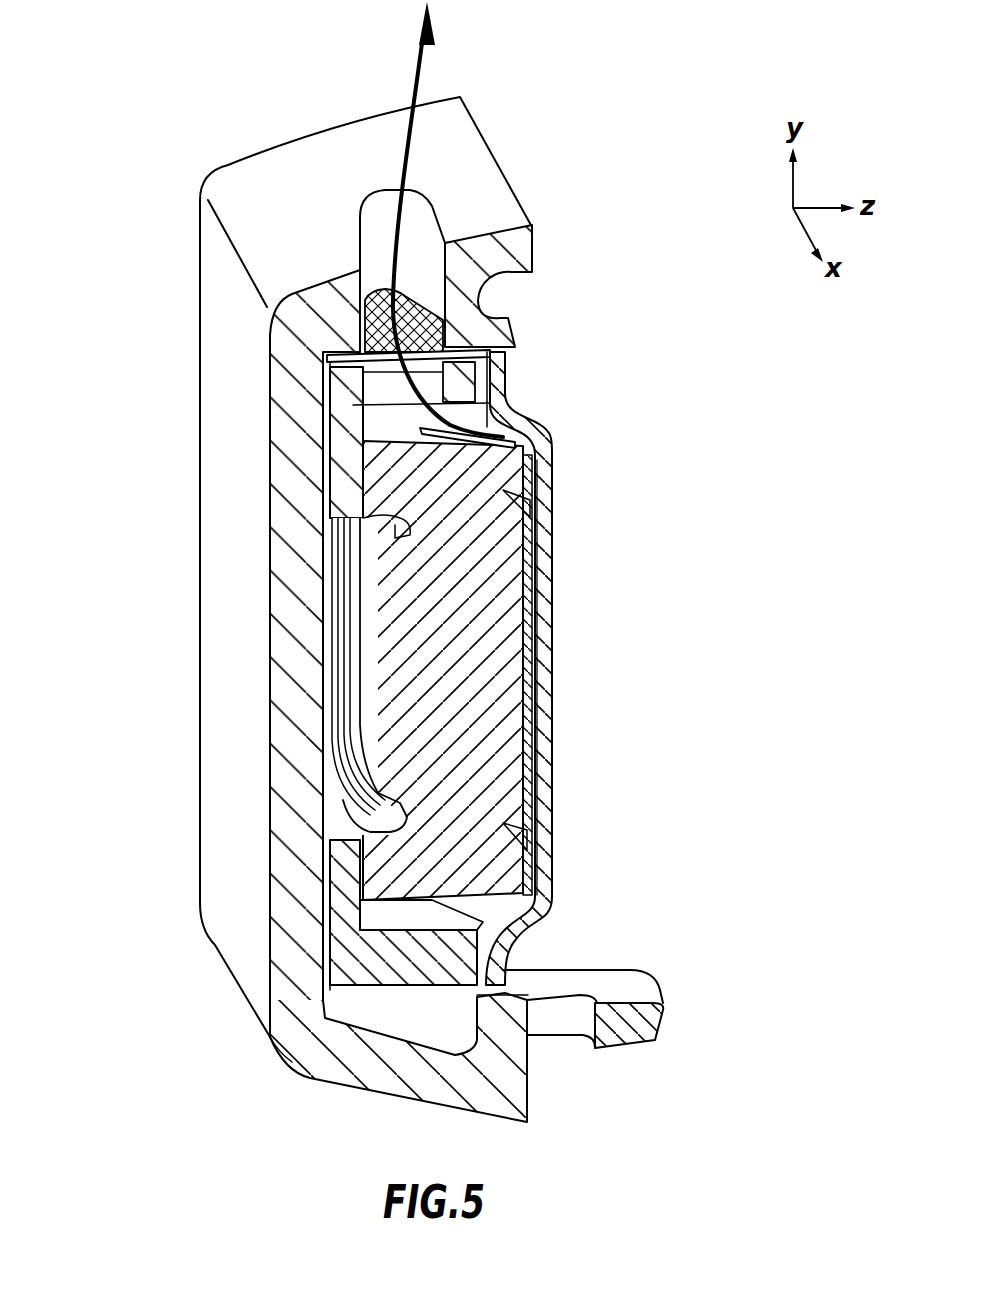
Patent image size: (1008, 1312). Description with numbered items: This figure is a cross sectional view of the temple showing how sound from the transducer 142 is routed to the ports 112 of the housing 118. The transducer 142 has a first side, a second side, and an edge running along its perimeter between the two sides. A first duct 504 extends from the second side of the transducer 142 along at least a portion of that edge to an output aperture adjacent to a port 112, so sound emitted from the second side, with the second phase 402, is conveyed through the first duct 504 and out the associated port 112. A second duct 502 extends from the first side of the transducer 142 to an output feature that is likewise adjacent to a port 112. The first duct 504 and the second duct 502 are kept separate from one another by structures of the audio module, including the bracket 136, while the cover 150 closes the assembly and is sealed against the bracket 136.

The port 112 is at (385, 220).
The housing 118 is at (232, 446).
The bracket 136 is at (365, 950).
The transducer 142 is at (487, 652).
The cover 150 is at (550, 607).
The second phase 402 is at (427, 65).
The second duct 502 is at (335, 816).
The first duct 504 is at (408, 416).